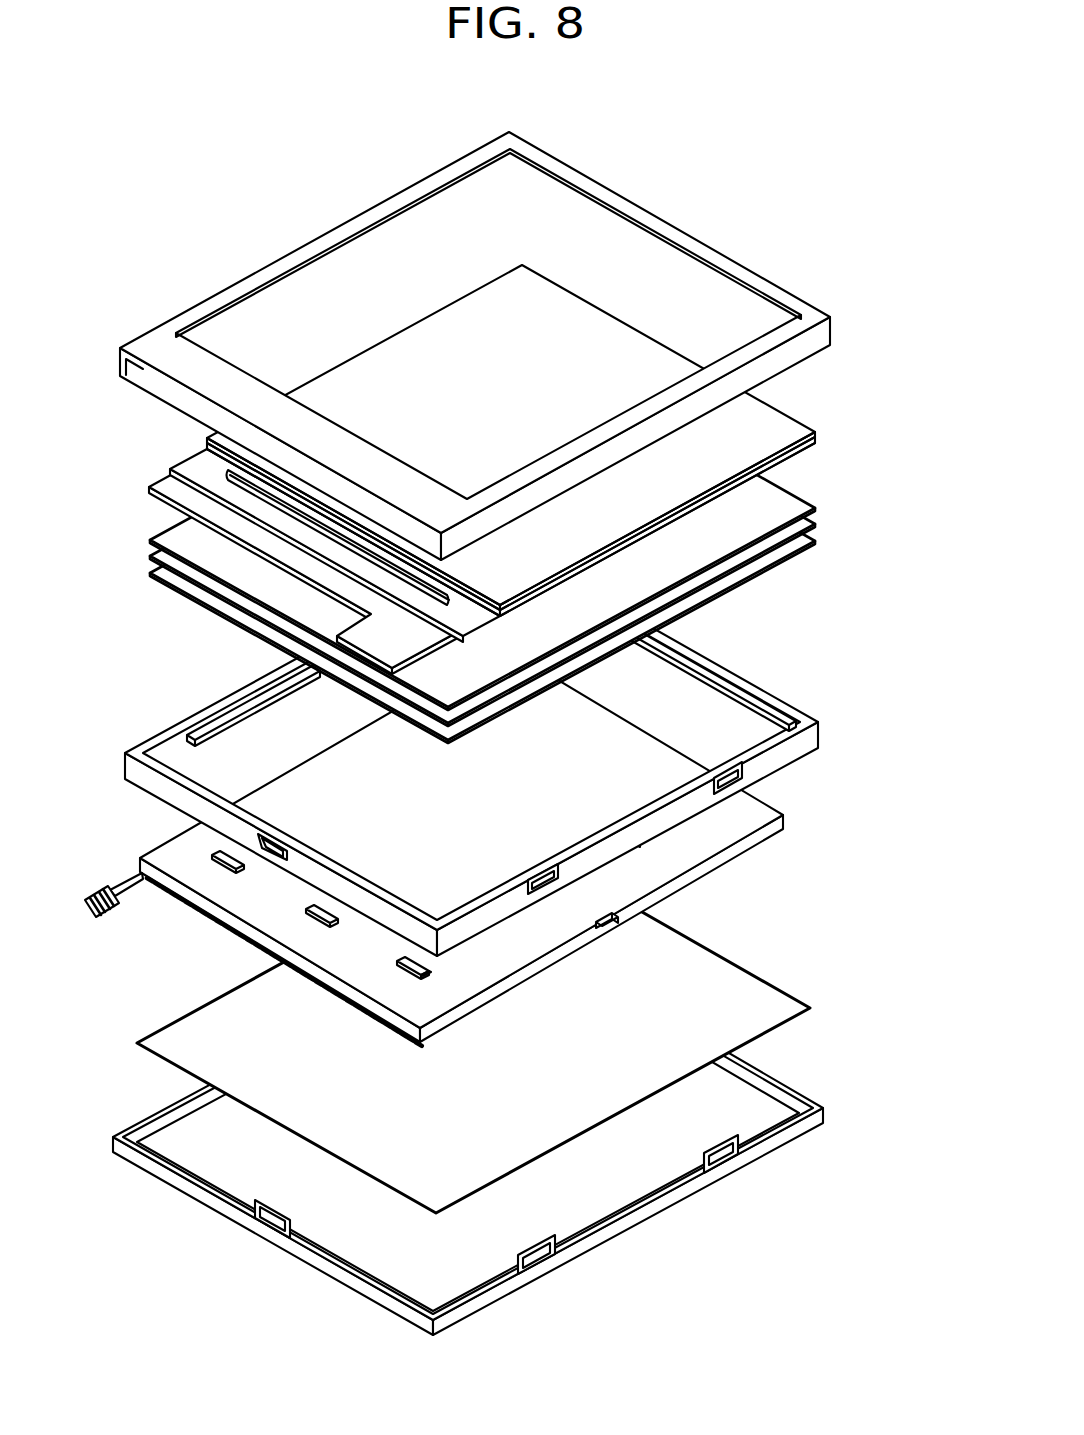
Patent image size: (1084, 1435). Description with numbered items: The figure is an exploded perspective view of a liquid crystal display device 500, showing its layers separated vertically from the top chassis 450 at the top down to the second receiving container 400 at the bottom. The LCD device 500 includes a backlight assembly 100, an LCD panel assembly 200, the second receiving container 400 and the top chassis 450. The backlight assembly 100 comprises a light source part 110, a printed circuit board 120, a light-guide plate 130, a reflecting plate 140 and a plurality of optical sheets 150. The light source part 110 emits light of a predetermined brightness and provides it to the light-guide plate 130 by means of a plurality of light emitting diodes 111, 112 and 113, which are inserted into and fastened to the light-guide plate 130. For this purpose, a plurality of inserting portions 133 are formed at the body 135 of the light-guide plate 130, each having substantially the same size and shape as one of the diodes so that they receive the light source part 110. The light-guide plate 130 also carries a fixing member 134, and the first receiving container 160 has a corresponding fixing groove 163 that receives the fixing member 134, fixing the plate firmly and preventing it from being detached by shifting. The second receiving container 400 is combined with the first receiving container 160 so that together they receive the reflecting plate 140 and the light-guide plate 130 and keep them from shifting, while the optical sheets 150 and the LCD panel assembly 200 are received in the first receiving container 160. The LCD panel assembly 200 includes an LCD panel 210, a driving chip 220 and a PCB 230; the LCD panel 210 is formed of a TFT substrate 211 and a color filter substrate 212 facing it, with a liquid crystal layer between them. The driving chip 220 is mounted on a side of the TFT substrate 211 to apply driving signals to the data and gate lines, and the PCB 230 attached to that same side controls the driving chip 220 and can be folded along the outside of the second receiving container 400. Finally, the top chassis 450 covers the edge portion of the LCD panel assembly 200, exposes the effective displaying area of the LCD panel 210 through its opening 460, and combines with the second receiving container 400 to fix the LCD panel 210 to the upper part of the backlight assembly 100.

The backlight assembly 100 is at (893, 490).
The light source part 110 is at (138, 940).
The light emitting diode 111 is at (400, 975).
The light emitting diode 112 is at (308, 916).
The light emitting diode 113 is at (216, 866).
The printed circuit board 120 is at (447, 1022).
The light-guide plate 130 is at (483, 870).
The inserting portion 133 is at (430, 967).
The fixing member 134 is at (610, 925).
The body 135 is at (545, 937).
The reflecting plate 140 is at (777, 1000).
The optical sheets 150 is at (818, 546).
The first receiving container 160 is at (768, 695).
The fixing groove 163 is at (640, 852).
The LCD panel assembly 200 is at (154, 459).
The LCD panel 210 is at (908, 412).
The TFT substrate 211 is at (818, 446).
The color filter substrate 212 is at (818, 438).
The driving chip 220 is at (213, 452).
The PCB 230 is at (185, 490).
The second receiving container 400 is at (770, 1150).
The top chassis 450 is at (475, 346).
The opening 460 is at (612, 262).
The LCD device 500 is at (513, 112).